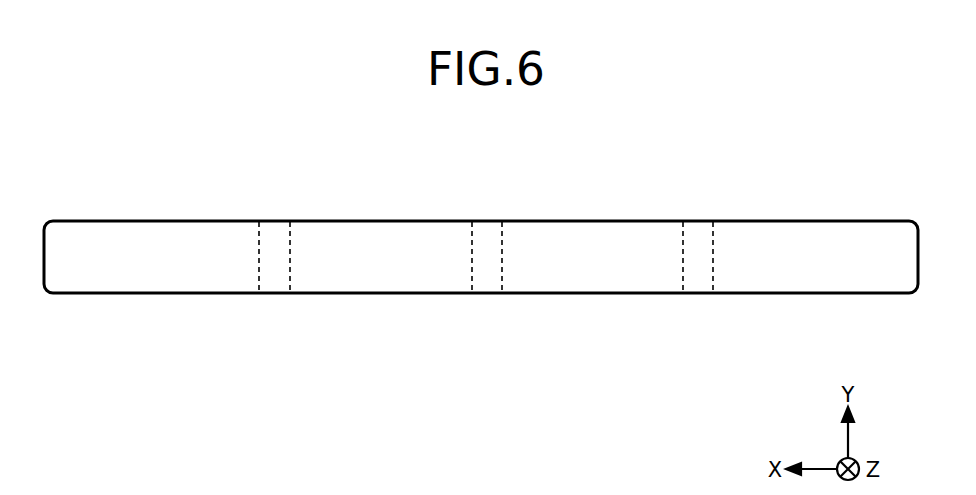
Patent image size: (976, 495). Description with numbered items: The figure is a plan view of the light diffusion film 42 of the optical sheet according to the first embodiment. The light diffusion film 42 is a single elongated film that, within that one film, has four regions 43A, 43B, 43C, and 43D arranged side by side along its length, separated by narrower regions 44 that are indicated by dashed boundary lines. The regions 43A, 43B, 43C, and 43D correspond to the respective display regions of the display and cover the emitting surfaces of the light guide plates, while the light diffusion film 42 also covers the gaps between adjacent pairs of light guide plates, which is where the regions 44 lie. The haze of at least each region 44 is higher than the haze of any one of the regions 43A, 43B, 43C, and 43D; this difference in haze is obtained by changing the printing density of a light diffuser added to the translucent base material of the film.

The light diffusion film 42 is at (795, 222).
The region 43A is at (158, 278).
The region 43B is at (391, 278).
The region 43C is at (590, 278).
The region 43D is at (814, 278).
The region 44 is at (274, 278).